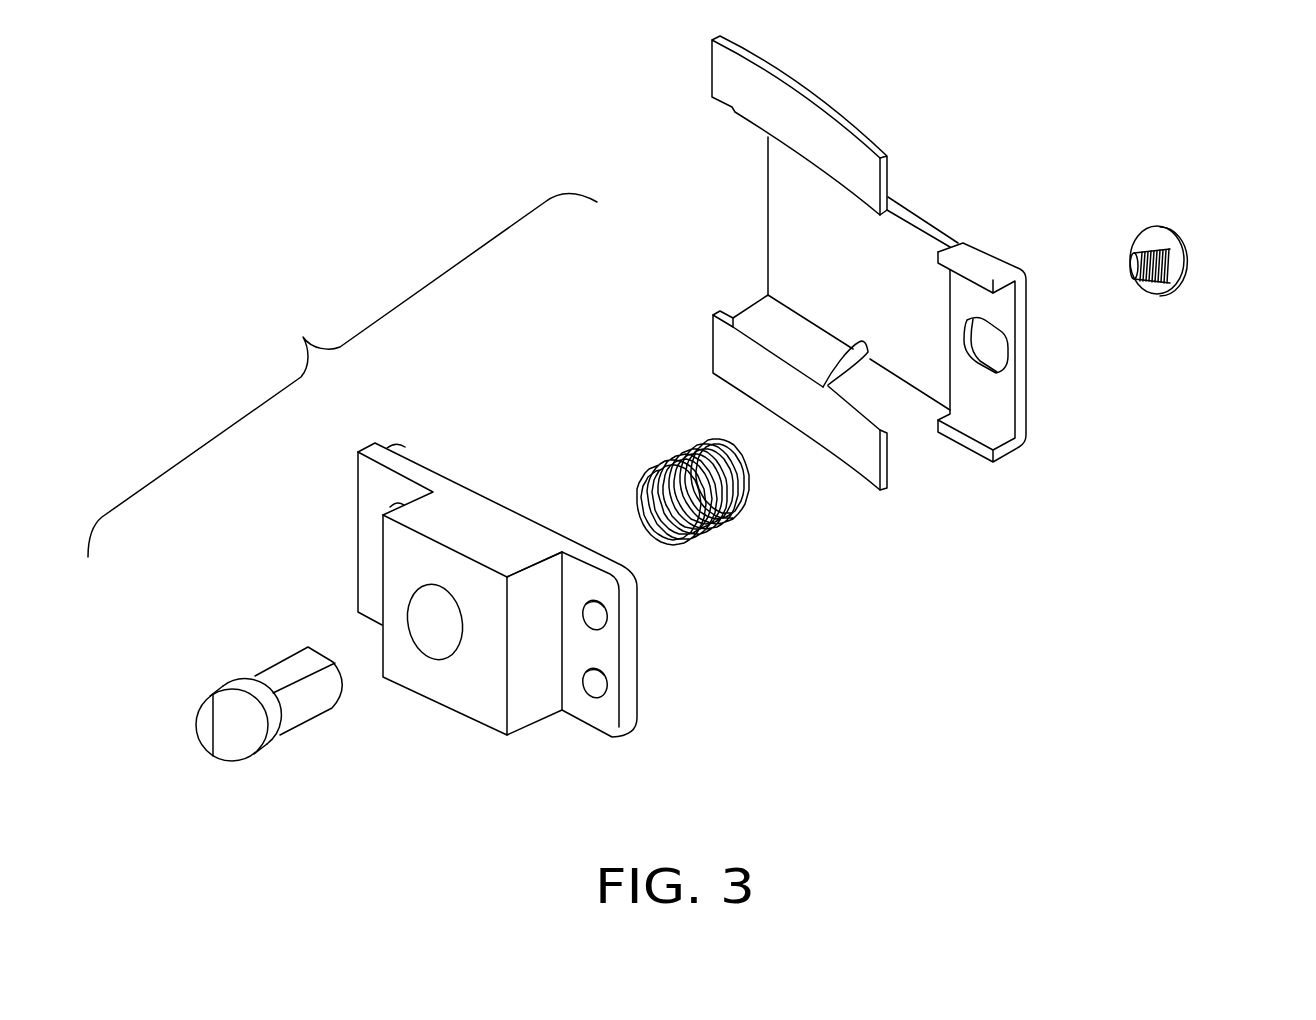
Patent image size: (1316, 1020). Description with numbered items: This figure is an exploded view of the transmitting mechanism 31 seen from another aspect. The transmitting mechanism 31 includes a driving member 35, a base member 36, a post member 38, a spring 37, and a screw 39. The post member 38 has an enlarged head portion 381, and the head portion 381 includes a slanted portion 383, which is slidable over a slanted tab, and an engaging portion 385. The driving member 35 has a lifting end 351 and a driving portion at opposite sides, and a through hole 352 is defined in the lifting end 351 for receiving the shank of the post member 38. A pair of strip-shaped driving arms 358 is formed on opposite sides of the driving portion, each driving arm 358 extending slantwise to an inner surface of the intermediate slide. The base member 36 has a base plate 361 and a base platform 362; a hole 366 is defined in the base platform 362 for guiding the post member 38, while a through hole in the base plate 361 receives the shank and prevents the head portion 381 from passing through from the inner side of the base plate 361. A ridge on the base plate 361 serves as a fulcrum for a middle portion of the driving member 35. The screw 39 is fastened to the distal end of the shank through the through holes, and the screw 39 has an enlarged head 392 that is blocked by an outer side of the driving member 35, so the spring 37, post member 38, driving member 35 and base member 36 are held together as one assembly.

The transmitting mechanism 31 is at (342, 376).
The driving member 35 is at (740, 271).
The lifting end 351 is at (1037, 352).
The through hole 352 is at (992, 347).
The driving arm 358 is at (728, 72).
The base member 36 is at (330, 502).
The base plate 361 is at (585, 702).
The base platform 362 is at (457, 654).
The hole 366 is at (443, 632).
The spring 37 is at (674, 428).
The post member 38 is at (245, 658).
The head portion 381 is at (272, 733).
The slanted portion 383 is at (235, 740).
The engaging portion 385 is at (207, 708).
The screw 39 is at (1186, 220).
The enlarged head 392 is at (1177, 278).